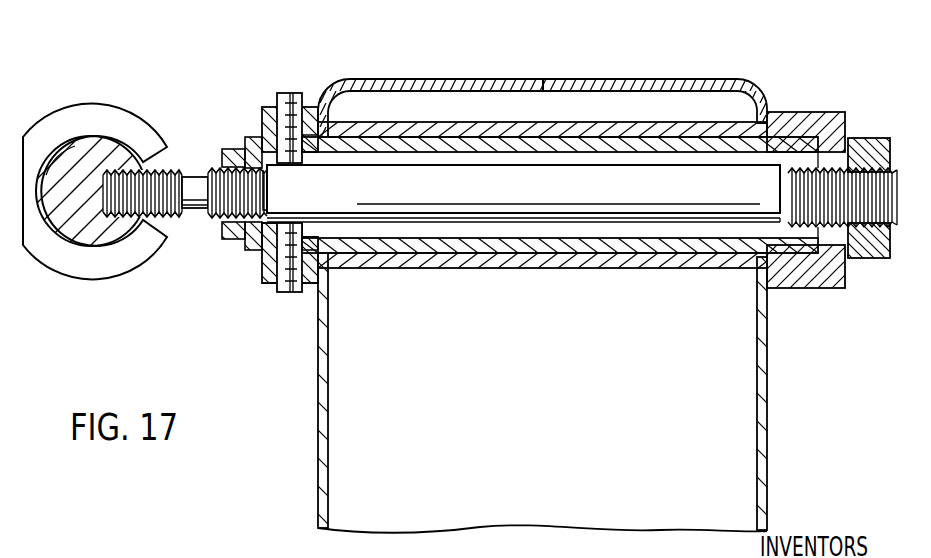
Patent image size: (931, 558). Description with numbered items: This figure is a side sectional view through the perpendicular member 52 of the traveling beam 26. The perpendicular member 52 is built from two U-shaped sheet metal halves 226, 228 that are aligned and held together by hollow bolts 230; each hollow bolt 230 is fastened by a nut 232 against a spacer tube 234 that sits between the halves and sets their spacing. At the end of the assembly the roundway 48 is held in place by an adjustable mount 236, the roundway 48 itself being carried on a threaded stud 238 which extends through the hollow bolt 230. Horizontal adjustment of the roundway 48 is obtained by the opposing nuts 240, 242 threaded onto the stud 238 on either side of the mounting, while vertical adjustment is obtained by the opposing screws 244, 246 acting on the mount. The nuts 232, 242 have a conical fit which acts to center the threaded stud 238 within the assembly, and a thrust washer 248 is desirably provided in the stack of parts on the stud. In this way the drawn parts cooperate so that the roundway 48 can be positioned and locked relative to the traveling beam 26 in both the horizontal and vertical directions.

The traveling beam 26 is at (318, 460).
The roundway 48 is at (84, 136).
The perpendicular member 52 is at (542, 83).
The U-shaped sheet metal half 226 is at (513, 79).
The U-shaped sheet metal half 228 is at (639, 79).
The hollow bolt 230 is at (413, 246).
The nut 232 is at (792, 112).
The spacer tube 234 is at (521, 268).
The adjustable mount 236 is at (191, 219).
The threaded stud 238 is at (176, 168).
The nut 240 is at (220, 221).
The nut 242 is at (866, 138).
The screw 244 is at (277, 106).
The screw 246 is at (292, 297).
The thrust washer 248 is at (252, 251).